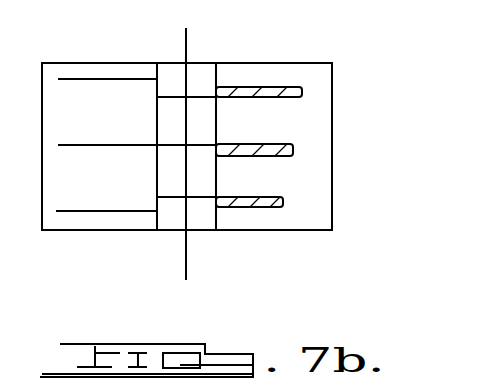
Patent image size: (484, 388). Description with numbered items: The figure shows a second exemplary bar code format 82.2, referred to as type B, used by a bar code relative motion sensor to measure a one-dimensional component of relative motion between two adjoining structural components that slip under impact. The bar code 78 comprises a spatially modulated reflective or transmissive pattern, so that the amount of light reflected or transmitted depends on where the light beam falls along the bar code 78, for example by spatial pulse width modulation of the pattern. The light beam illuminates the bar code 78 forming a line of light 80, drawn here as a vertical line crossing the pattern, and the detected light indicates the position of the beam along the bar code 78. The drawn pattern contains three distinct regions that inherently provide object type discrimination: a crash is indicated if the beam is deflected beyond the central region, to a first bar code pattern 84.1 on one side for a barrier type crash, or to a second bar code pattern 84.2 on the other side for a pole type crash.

The bar code 78 is at (333, 243).
The second exemplary bar code format 82.2 is at (273, 58).
The first bar code pattern 84.1 is at (61, 240).
The second bar code pattern 84.2 is at (217, 238).
The line of light 80 is at (184, 265).